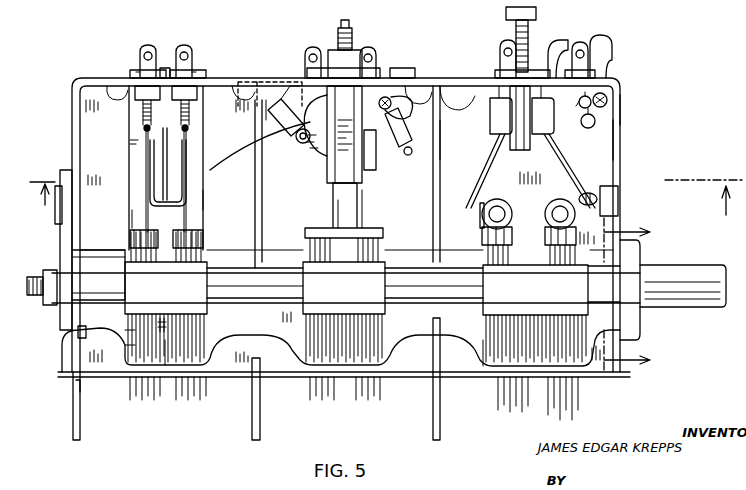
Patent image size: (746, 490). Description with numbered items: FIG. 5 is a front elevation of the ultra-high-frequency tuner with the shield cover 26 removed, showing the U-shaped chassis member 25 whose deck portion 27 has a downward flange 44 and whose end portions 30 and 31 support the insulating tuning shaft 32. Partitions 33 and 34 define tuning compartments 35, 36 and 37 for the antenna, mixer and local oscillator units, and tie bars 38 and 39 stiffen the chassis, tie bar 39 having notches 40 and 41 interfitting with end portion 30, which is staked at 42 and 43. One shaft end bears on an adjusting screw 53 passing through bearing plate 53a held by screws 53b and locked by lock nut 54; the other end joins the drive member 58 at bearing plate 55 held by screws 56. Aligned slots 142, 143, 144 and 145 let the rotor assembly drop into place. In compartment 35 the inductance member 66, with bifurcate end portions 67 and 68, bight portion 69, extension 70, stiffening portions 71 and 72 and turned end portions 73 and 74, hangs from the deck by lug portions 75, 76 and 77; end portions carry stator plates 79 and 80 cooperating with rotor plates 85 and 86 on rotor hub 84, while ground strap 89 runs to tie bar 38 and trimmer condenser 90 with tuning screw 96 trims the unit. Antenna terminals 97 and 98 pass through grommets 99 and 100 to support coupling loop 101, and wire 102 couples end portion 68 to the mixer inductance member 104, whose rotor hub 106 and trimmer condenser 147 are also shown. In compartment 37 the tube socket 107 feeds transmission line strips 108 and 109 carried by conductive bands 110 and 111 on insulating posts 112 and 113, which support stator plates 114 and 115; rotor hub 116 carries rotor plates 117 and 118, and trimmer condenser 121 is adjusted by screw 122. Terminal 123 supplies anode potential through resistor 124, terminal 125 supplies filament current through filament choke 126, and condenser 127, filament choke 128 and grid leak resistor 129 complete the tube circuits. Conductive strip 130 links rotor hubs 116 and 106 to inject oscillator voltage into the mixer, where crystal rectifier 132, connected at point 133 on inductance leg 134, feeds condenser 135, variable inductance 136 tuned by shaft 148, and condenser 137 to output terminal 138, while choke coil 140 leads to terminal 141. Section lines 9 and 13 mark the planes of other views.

The section line 9- 9 is at (386, 201).
The section line 13- 13 is at (637, 300).
The chassis member 25 is at (631, 112).
The shield cover 26 is at (714, 5).
The deck portion 27 is at (252, 80).
The end portion 30 is at (72, 131).
The end portion 31 is at (621, 143).
The tuning shaft 32 is at (420, 300).
The partition 33 is at (282, 122).
The partition 34 is at (442, 158).
The tuning compartment 35 is at (128, 428).
The tuning compartment 36 is at (338, 428).
The tuning compartment 37 is at (524, 428).
The tie bar 38 is at (528, 180).
The tie bar 39 is at (286, 370).
The notch 40 is at (70, 378).
The notch 41 is at (64, 340).
The staking 42 is at (80, 380).
The staking 43 is at (92, 331).
The flange 44 is at (430, 84).
The adjusting screw 53 is at (36, 298).
The bearing plate 53a is at (62, 250).
The screws 53b is at (60, 188).
The lock nut 54 is at (50, 310).
The bearing plate 55 is at (638, 262).
The screws 56 is at (624, 206).
The tuning shaft drive member 58 is at (690, 307).
The inductance member 66 is at (210, 129).
The bifurcate end portion 67 is at (136, 202).
The bifurcate end portion 68 is at (203, 198).
The bight portion 69 is at (162, 136).
The extension 70 is at (165, 110).
The stiffening portion 71 is at (152, 162).
The stiffening portion 72 is at (178, 160).
The end portion 73 is at (138, 228).
The end portion 74 is at (192, 230).
The lug portion 75 is at (130, 74).
The lug portion 76 is at (164, 70).
The lug portion 77 is at (200, 74).
The stator plates 79 is at (128, 336).
The stator plates 80 is at (207, 322).
The rotor hub 84 is at (212, 282).
The rotor plates 85 is at (128, 348).
The rotor plates 86 is at (212, 345).
The ground strap portion 89 is at (170, 142).
The split stator trimmer condenser 90 is at (164, 262).
The tuning screw 96 is at (170, 380).
The antenna input terminal 97 is at (148, 48).
The antenna input terminal 98 is at (190, 48).
The insulating grommet 99 is at (140, 72).
The insulating grommet 100 is at (196, 72).
The coupling loop 101 is at (140, 186).
The wire 102 is at (282, 150).
The inductance member 104 is at (375, 209).
The rotor hub 106 is at (300, 310).
The tube socket 107 is at (540, 60).
The conductive strip 108 is at (482, 162).
The conductive strip 109 is at (572, 162).
The conductive band 110 is at (498, 198).
The conductive band 111 is at (552, 197).
The insulating post 112 is at (480, 218).
The insulating post 113 is at (534, 228).
The stator plates 114 is at (480, 242).
The stator plates 115 is at (578, 246).
The rotor hub 116 is at (532, 300).
The rotor condenser plates 117 is at (505, 351).
The rotor condenser plates 118 is at (584, 324).
The split stator trimmer condenser 121 is at (526, 132).
The screw 122 is at (528, 36).
The terminal 123 is at (498, 48).
The resistor 124 is at (496, 100).
The terminal 125 is at (590, 44).
The filament choke 126 is at (582, 106).
The condenser 127 is at (608, 98).
The filament choke 128 is at (596, 124).
The grid leak resistor 129 is at (548, 132).
The conductive strip 130 is at (404, 280).
The crystal rectifier 132 is at (402, 140).
The point 133 is at (402, 160).
The inductance leg 134 is at (362, 210).
The condenser 135 is at (352, 196).
The variable inductance 136 is at (316, 170).
The condenser 137 is at (290, 118).
The intermediate frequency output terminal 138 is at (314, 50).
The choke coil 140 is at (396, 112).
The terminal 141 is at (378, 55).
The slot 142 is at (84, 258).
The slot 143 is at (258, 268).
The slot 144 is at (440, 318).
The slot 145 is at (612, 266).
The trimming condenser 147 is at (340, 300).
The tuning shaft 148 is at (350, 40).